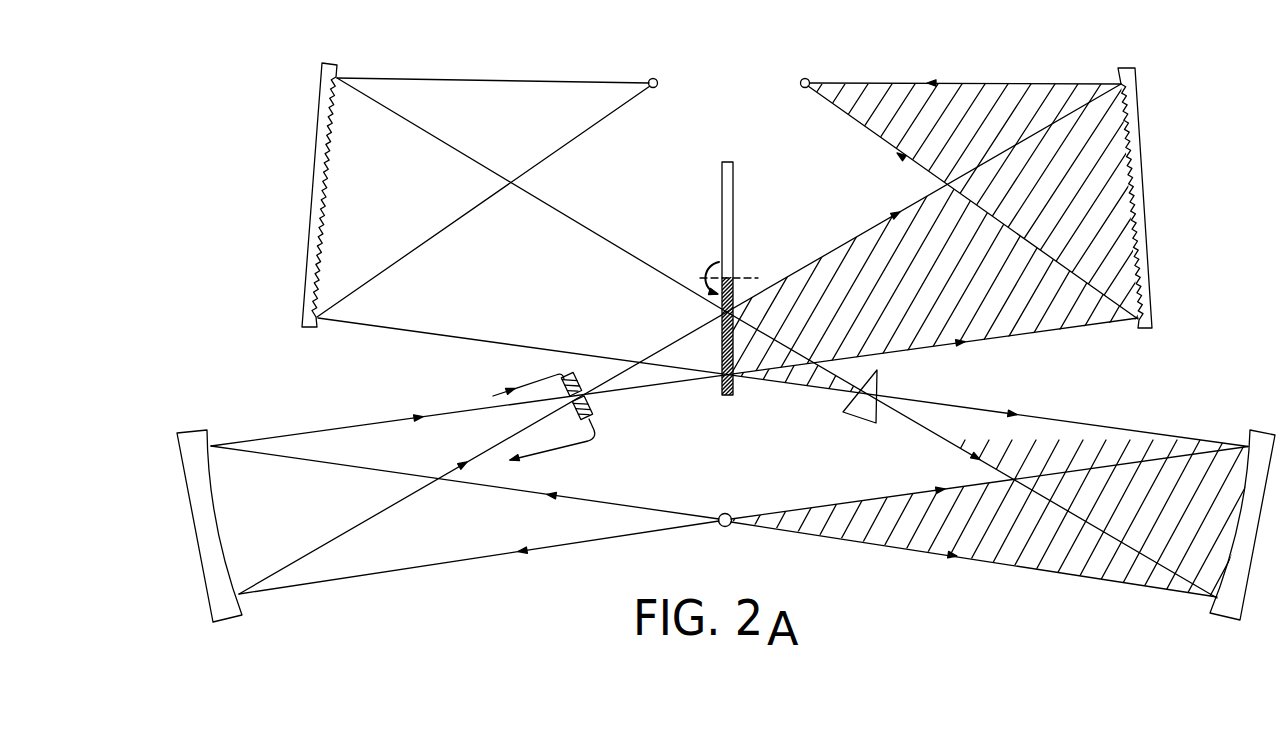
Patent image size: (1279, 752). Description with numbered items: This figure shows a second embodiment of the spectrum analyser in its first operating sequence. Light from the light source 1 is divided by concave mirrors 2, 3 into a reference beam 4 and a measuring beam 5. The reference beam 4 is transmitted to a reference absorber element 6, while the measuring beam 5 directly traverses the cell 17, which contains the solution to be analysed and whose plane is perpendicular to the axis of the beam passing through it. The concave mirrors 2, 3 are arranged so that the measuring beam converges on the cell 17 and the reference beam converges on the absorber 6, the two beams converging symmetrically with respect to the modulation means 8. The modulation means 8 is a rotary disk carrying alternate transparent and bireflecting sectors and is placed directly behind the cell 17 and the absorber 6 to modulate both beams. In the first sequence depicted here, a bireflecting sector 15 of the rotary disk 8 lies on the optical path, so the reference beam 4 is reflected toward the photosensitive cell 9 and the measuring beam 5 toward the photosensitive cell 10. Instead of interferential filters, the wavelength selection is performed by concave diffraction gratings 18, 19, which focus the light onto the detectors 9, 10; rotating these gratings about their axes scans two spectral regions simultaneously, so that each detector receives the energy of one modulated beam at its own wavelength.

The light source 1 is at (735, 513).
The concave mirror 2 is at (192, 438).
The concave mirror 3 is at (1258, 438).
The reference beam 4 is at (1063, 432).
The measuring beam 5 is at (376, 424).
The reference absorber element 6 is at (863, 409).
The modulation means 8 is at (738, 181).
The photosensitive cell 9 is at (807, 79).
The photosensitive cell 10 is at (650, 78).
The bireflecting sector 15 is at (720, 393).
The cell 17 is at (598, 409).
The concave diffraction grating 18 is at (1130, 90).
The concave diffraction grating 19 is at (322, 89).